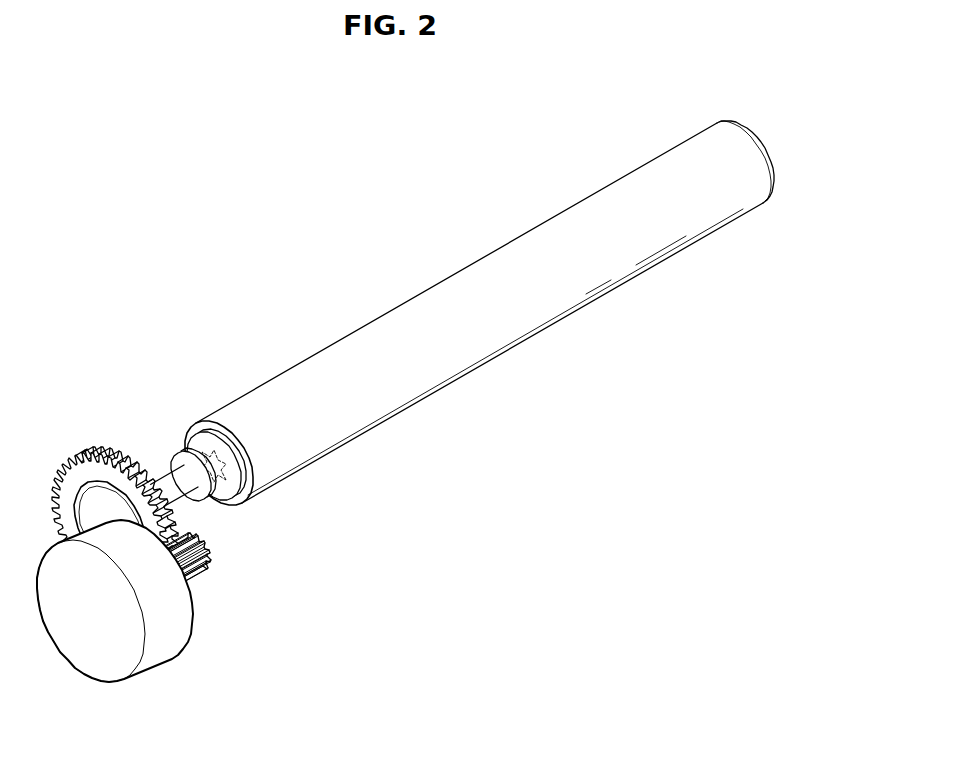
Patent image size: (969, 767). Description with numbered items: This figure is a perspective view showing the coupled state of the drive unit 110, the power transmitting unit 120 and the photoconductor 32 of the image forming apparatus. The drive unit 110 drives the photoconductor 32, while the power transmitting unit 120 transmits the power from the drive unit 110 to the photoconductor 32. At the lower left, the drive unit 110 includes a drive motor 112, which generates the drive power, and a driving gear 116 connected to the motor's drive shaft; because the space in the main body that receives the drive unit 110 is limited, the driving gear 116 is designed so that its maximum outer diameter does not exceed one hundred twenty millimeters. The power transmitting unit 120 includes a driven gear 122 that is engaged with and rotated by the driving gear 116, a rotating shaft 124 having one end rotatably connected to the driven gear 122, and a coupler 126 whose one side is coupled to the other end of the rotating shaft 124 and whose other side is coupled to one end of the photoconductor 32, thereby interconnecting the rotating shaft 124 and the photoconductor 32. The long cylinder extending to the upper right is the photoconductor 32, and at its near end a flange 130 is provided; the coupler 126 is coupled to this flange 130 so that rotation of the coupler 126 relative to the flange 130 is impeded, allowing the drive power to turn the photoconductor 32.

The photoconductor 32 is at (400, 288).
The drive unit 110 is at (145, 631).
The drive motor 112 is at (119, 668).
The driving gear 116 is at (199, 578).
The power transmitting unit 120 is at (109, 468).
The driven gear 122 is at (64, 467).
The rotating shaft 124 is at (169, 470).
The coupler 126 is at (200, 504).
The flange 130 is at (229, 440).